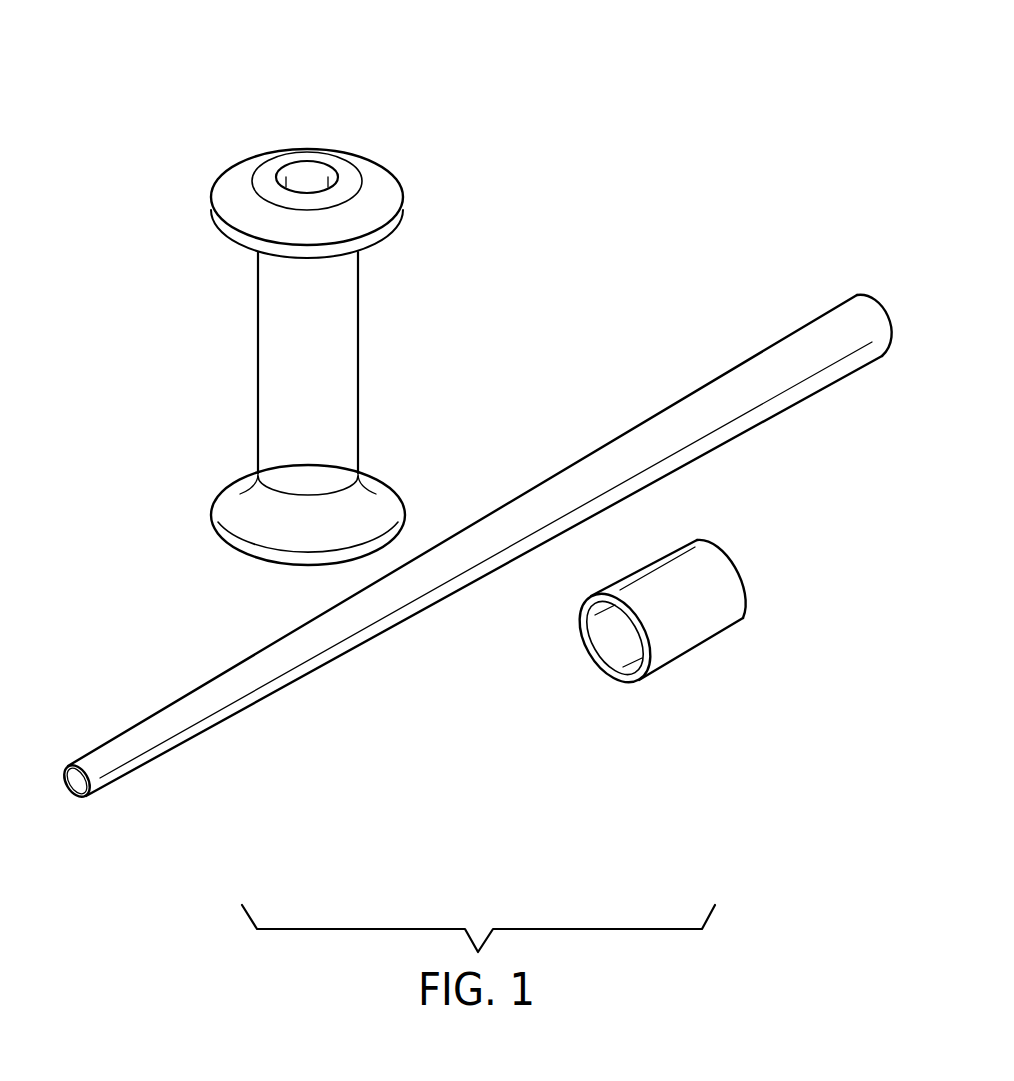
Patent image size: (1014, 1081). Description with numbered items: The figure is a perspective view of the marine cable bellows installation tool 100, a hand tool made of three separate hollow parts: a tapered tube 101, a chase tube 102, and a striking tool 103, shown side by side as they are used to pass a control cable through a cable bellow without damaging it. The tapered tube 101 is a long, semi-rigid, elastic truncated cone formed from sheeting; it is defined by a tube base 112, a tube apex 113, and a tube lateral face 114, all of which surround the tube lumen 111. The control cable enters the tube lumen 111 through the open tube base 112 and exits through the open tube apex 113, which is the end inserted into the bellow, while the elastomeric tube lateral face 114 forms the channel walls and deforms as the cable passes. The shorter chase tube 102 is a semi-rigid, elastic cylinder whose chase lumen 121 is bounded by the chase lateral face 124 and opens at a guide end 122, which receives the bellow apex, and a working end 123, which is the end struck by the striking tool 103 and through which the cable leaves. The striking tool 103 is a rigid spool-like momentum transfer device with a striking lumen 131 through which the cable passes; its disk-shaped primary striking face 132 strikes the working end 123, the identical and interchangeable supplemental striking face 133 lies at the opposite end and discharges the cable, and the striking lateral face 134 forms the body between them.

The marine cable bellows installation tool 100 is at (172, 112).
The tapered tube 101 is at (720, 350).
The chase tube 102 is at (710, 662).
The striking tool 103 is at (415, 288).
The tube lumen 111 is at (72, 783).
The tube base 112 is at (878, 352).
The tube apex 113 is at (105, 785).
The tube lateral face 114 is at (380, 622).
The chase lumen 121 is at (617, 640).
The guide end 122 is at (722, 550).
The working end 123 is at (583, 625).
The chase lateral face 124 is at (702, 612).
The striking lumen 131 is at (307, 177).
The primary striking face 132 is at (370, 173).
The supplemental striking face 133 is at (363, 513).
The striking lateral face 134 is at (320, 363).